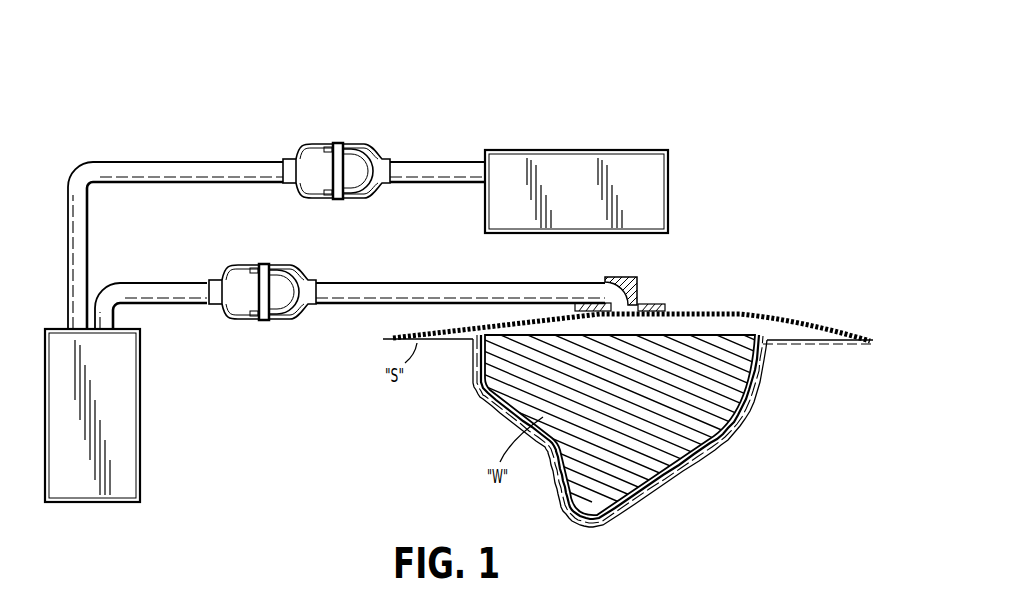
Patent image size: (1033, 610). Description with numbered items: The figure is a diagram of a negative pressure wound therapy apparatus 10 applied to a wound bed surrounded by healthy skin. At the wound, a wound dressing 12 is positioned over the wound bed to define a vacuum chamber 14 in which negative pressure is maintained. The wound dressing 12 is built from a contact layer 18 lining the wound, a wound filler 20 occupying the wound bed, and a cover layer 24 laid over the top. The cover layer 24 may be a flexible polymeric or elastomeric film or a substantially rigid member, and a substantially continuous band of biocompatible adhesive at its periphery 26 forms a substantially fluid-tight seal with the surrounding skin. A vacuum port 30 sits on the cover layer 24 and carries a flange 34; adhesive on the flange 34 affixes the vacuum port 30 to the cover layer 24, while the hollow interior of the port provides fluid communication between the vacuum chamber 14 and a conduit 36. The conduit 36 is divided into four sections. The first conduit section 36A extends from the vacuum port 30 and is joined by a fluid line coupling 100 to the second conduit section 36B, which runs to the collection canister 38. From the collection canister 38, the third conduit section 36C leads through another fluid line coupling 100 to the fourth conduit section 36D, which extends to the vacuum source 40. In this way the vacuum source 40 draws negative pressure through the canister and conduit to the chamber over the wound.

The negative pressure wound therapy apparatus 10 is at (698, 85).
The wound dressing 12 is at (684, 243).
The vacuum chamber 14 is at (733, 328).
The contact layer 18 is at (763, 377).
The wound filler 20 is at (730, 447).
The cover layer 24 is at (695, 312).
The periphery of the cover layer 26 is at (393, 335).
The vacuum port 30 is at (617, 277).
The flange 34 is at (648, 304).
The conduit 36 is at (519, 280).
The first conduit section 36A is at (432, 283).
The second conduit section 36B is at (138, 283).
The third conduit section 36C is at (200, 162).
The fourth conduit section 36D is at (428, 161).
The collection canister 38 is at (140, 388).
The vacuum source 40 is at (548, 150).
The fluid line coupling 100 is at (325, 142).